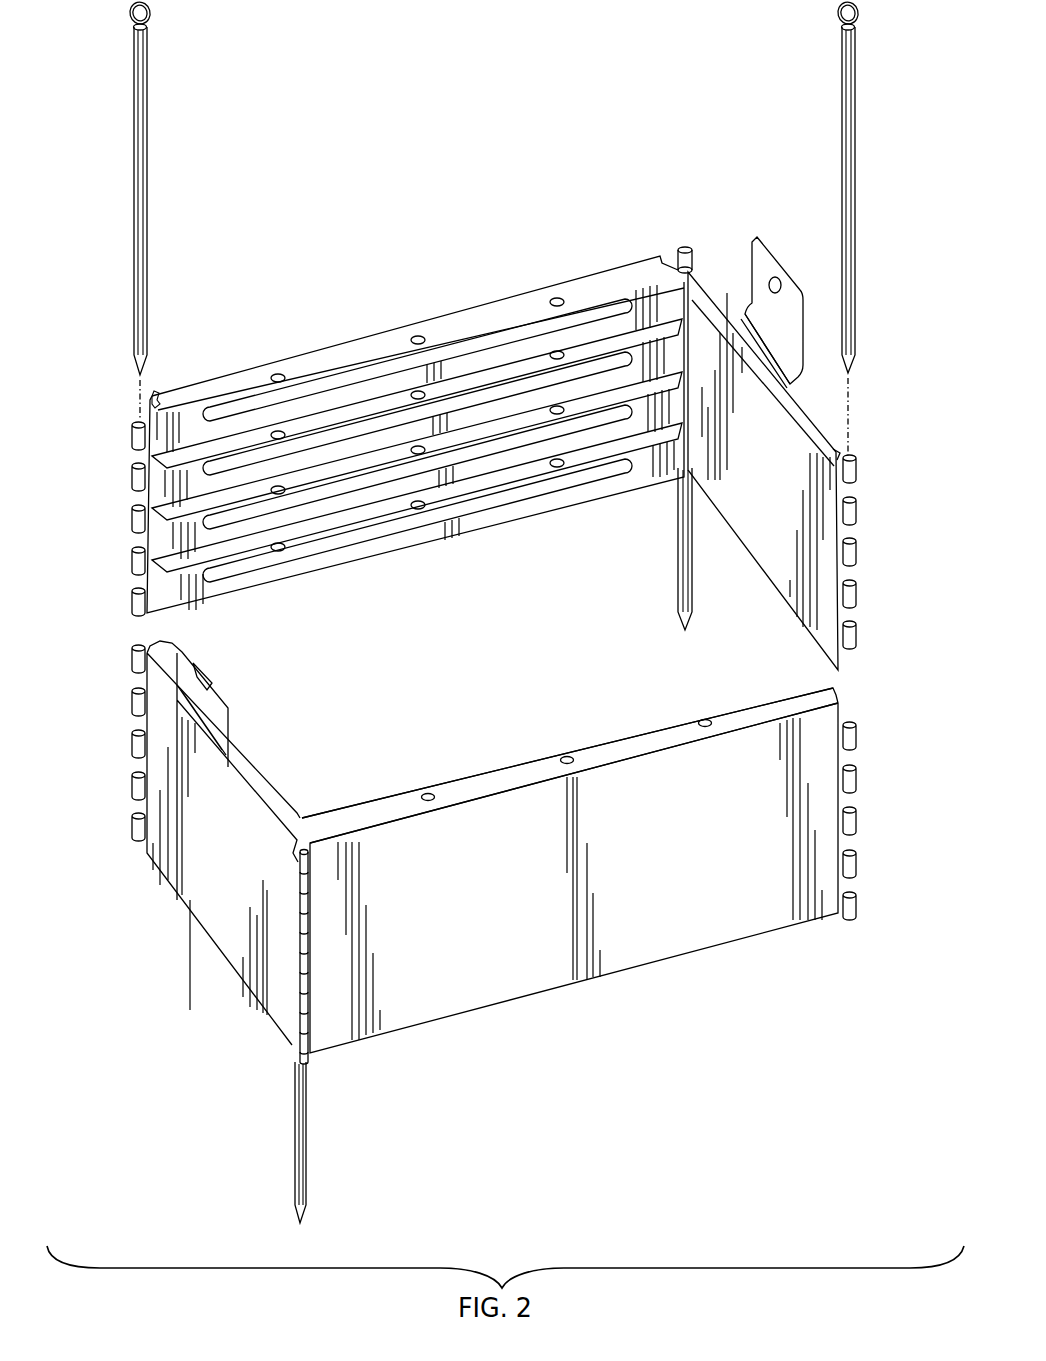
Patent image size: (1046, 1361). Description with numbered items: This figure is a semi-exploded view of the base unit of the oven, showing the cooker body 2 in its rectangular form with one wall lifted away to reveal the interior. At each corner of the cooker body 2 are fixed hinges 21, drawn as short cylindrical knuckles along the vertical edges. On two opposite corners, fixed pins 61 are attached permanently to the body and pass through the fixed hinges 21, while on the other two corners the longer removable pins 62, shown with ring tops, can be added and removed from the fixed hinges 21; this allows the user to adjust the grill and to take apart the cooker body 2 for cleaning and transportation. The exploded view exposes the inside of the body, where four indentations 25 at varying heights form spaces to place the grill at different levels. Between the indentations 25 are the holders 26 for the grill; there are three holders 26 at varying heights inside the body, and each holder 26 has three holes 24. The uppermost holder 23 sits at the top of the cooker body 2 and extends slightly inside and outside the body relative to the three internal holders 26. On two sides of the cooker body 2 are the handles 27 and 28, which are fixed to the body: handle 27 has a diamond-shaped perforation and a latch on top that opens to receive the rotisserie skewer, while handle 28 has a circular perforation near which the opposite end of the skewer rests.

The cooker body 2 is at (480, 852).
The fixed hinges 21 is at (866, 716).
The uppermost holder 23 is at (770, 705).
The holes 24 is at (557, 298).
The indentations 25 is at (530, 490).
The holders 26 is at (360, 515).
The handle 27 is at (187, 690).
The handle 28 is at (752, 250).
The fixed pins 61 is at (678, 575).
The removable pins 62 is at (147, 135).